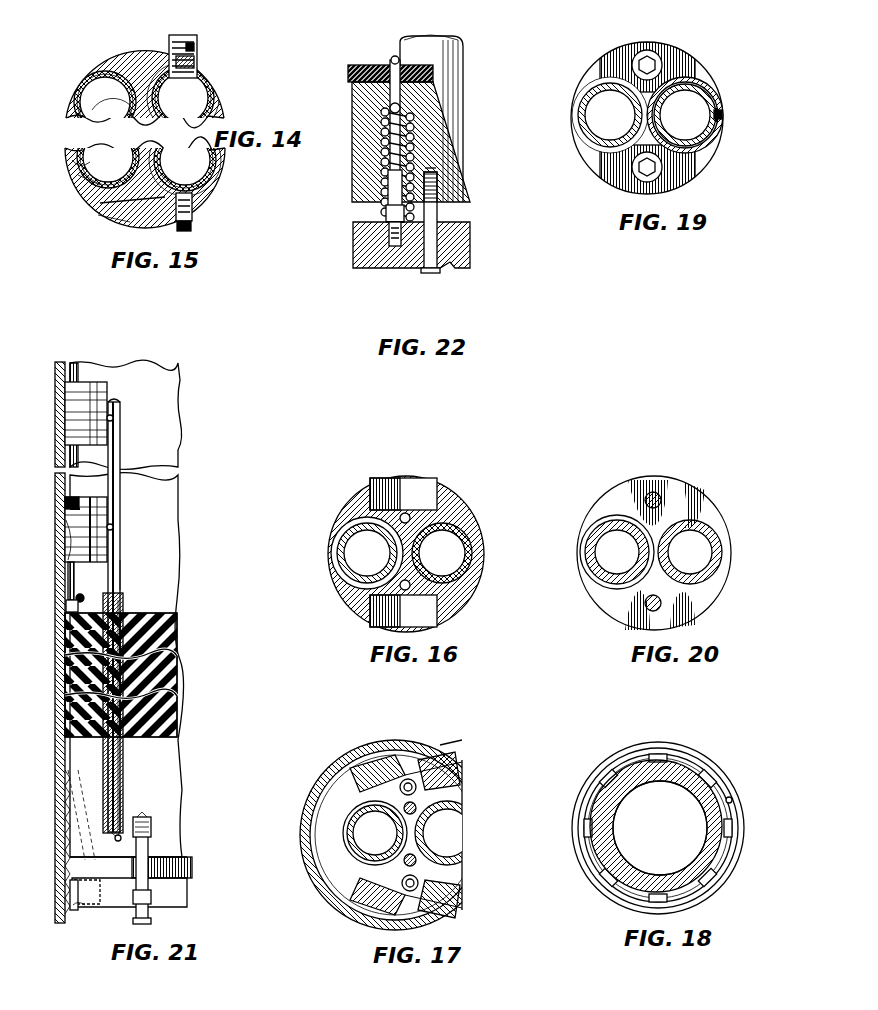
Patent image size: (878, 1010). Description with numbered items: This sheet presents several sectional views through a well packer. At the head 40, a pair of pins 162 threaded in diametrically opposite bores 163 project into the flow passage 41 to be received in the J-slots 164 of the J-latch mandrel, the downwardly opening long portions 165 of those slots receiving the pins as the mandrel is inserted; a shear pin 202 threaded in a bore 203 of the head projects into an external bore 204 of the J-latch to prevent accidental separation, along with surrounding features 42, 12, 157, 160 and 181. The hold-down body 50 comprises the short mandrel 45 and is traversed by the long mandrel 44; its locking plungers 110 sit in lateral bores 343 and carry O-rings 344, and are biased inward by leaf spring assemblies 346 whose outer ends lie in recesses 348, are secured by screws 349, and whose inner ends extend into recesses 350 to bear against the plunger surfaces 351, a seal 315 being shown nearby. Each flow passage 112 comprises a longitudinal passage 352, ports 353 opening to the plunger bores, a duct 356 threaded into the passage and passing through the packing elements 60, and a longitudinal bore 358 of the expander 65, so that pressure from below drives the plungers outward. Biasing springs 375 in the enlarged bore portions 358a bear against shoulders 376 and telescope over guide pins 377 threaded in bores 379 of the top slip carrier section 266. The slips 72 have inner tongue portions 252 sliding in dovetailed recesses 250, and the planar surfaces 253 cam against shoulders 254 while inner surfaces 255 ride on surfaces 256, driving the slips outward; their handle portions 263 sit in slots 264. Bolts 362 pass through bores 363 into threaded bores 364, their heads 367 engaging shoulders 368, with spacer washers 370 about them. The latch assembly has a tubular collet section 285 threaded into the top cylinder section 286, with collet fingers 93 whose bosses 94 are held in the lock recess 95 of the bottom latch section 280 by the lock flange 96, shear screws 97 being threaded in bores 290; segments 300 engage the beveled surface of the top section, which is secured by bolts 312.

In FIG. 14, the head 40 is at (90, 54).
In FIG. 15, the head 40 is at (77, 206).
In FIG. 14, the flow passage 41 is at (192, 108).
In FIG. 15, the flow passage 41 is at (165, 175).
In FIG. 14, the bore 42 is at (111, 100).
In FIG. 15, the housing 12 is at (72, 162).
In FIG. 14, the sleeve 157 is at (229, 94).
In FIG. 15, the sleeve 157 is at (208, 180).
In FIG. 15, the body section 160 is at (85, 188).
In FIG. 14, the pins 162 is at (198, 57).
In FIG. 14, the bores 163 is at (178, 44).
In FIG. 14, the J-slots 164 is at (214, 71).
In FIG. 14, the long portions of the J-slots 165 is at (217, 108).
In FIG. 15, the long portions of the J-slots 165 is at (165, 158).
In FIG. 14, the pin 181 is at (99, 122).
In FIG. 15, the shear pin 202 is at (194, 204).
In FIG. 15, the bore 203 is at (191, 226).
In FIG. 15, the external bore 204 is at (104, 216).
In FIG. 21, the hold-down body 50 is at (150, 375).
In FIG. 16, the hold-down body 50 is at (466, 604).
In FIG. 19, the long mandrel 44 is at (605, 86).
In FIG. 16, the long mandrel 44 is at (474, 554).
In FIG. 20, the long mandrel 44 is at (722, 552).
In FIG. 17, the long mandrel 44 is at (458, 812).
In FIG. 18, the long mandrel 44 is at (631, 765).
In FIG. 16, the short mandrel 45 is at (345, 535).
In FIG. 20, the short mandrel 45 is at (604, 530).
In FIG. 17, the short mandrel 45 is at (350, 833).
In FIG. 21, the resilient packing elements 60 is at (72, 712).
In FIG. 17, the expander 65 is at (348, 862).
In FIG. 17, the locking slips 72 is at (460, 762).
In FIG. 18, the collet fingers 93 is at (732, 845).
In FIG. 18, the external bosses 94 is at (735, 824).
In FIG. 18, the internal annular lock recess 95 is at (732, 800).
In FIG. 18, the external annular lock flange 96 is at (672, 768).
In FIG. 19, the shear screws 97 is at (723, 115).
In FIG. 21, the locking plungers 110 is at (62, 400).
In FIG. 21, the flow passages 112 is at (133, 576).
In FIG. 17, the dovetailed recesses 250 is at (440, 798).
In FIG. 17, the inner tongue portions 252 is at (445, 757).
In FIG. 17, the planar surfaces 253 is at (345, 797).
In FIG. 17, the shoulders 254 is at (350, 775).
In FIG. 17, the inner surfaces 255 is at (455, 870).
In FIG. 17, the surfaces defining the inner ends of the dovetailed grooves 256 is at (458, 884).
In FIG. 21, the handle portions 263 is at (72, 897).
In FIG. 21, the slots 264 is at (88, 905).
In FIG. 22, the top section of the slip carrier 266 is at (365, 260).
In FIG. 19, the top section of the slip carrier 266 is at (715, 73).
In FIG. 21, the top section of the slip carrier 266 is at (165, 891).
In FIG. 18, the bottom latch section 280 is at (735, 835).
In FIG. 19, the tubular collet section 285 is at (717, 100).
In FIG. 18, the tubular collet section 285 is at (722, 865).
In FIG. 19, the top section of the cylinder 286 is at (693, 62).
In FIG. 20, the top section of the cylinder 286 is at (710, 512).
In FIG. 19, the bores 290 is at (722, 122).
In FIG. 20, the segments 300 is at (590, 570).
In FIG. 19, the bolts 312 is at (647, 50).
In FIG. 20, the bolts 312 is at (655, 492).
In FIG. 21, the seal 315 is at (72, 536).
In FIG. 21, the lateral bores 343 is at (106, 365).
In FIG. 21, the O-rings 344 is at (92, 506).
In FIG. 21, the leaf spring assemblies 346 is at (75, 574).
In FIG. 21, the external longitudinal recesses 348 is at (74, 596).
In FIG. 21, the screws 349 is at (66, 614).
In FIG. 21, the recesses of the plungers 350 is at (62, 502).
In FIG. 21, the outer surfaces of the plungers 351 is at (70, 510).
In FIG. 21, the longitudinal passage 352 is at (120, 546).
In FIG. 16, the longitudinal passage 352 is at (438, 522).
In FIG. 21, the ports 353 is at (113, 416).
In FIG. 16, the ports 353 is at (428, 488).
In FIG. 21, the duct 356 is at (121, 606).
In FIG. 17, the duct 356 is at (418, 787).
In FIG. 22, the longitudinal bore 358 is at (358, 100).
In FIG. 21, the longitudinal bore 358 is at (121, 835).
In FIG. 22, the enlarged lower portions of the bores 358a is at (384, 172).
In FIG. 22, the bolts 362 is at (456, 253).
In FIG. 21, the bolts 362 is at (152, 884).
In FIG. 17, the bolts 362 is at (420, 856).
In FIG. 21, the bores 363 is at (130, 891).
In FIG. 21, the threaded bores 364 is at (150, 830).
In FIG. 21, the bolt heads 367 is at (151, 921).
In FIG. 21, the annular downwardly facing shoulders 368 is at (152, 898).
In FIG. 22, the spacer washer 370 is at (443, 222).
In FIG. 21, the spacer washer 370 is at (135, 870).
In FIG. 22, the biasing springs 375 is at (384, 213).
In FIG. 22, the annular shoulders 376 is at (380, 114).
In FIG. 22, the spring retainers or guide pins 377 is at (384, 221).
In FIG. 22, the upwardly opening bores 379 is at (368, 245).